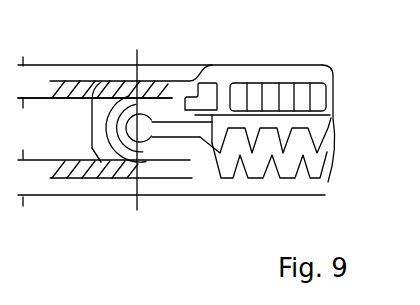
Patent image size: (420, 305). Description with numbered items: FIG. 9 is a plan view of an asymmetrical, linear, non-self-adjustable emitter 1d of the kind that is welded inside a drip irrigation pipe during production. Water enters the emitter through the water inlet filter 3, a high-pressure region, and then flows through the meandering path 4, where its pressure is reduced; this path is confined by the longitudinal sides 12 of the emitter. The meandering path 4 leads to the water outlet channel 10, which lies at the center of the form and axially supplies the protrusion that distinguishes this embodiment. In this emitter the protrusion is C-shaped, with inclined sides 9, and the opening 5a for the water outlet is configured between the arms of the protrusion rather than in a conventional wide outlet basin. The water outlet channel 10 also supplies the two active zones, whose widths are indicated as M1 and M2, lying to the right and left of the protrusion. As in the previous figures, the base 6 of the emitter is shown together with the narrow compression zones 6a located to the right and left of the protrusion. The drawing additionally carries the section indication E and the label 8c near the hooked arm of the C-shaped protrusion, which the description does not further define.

The emitter 1d is at (240, 65).
The water inlet filter 3 is at (272, 98).
The longitudinal sides 12 is at (305, 120).
The water outlet channel 10 is at (203, 133).
The meandering path 4 is at (318, 160).
The hook 8c is at (135, 113).
The base 6 is at (98, 120).
The narrow compression zones 6a is at (146, 160).
The opening 5a is at (148, 143).
The inclined sides 9 is at (154, 103).
The section line E is at (137, 50).
The width of active zone M1 is at (171, 178).
The width of active zone M2 is at (169, 82).